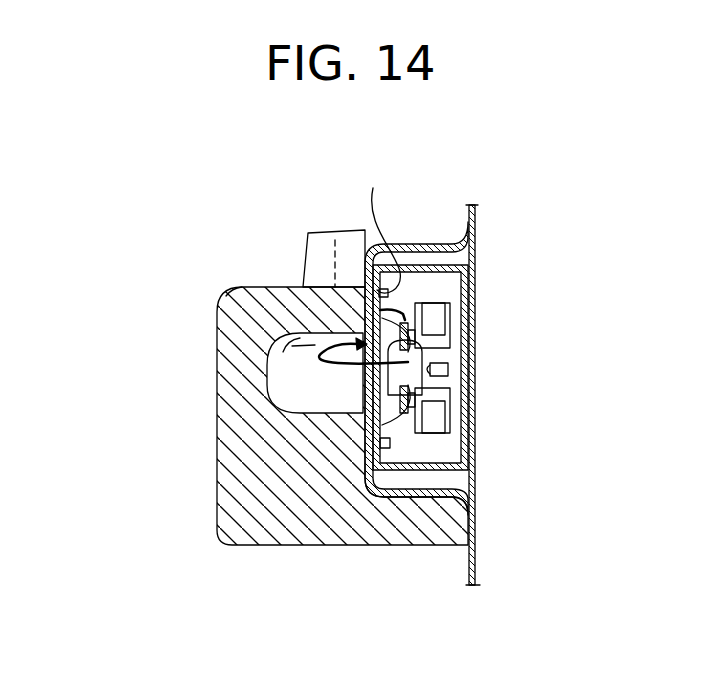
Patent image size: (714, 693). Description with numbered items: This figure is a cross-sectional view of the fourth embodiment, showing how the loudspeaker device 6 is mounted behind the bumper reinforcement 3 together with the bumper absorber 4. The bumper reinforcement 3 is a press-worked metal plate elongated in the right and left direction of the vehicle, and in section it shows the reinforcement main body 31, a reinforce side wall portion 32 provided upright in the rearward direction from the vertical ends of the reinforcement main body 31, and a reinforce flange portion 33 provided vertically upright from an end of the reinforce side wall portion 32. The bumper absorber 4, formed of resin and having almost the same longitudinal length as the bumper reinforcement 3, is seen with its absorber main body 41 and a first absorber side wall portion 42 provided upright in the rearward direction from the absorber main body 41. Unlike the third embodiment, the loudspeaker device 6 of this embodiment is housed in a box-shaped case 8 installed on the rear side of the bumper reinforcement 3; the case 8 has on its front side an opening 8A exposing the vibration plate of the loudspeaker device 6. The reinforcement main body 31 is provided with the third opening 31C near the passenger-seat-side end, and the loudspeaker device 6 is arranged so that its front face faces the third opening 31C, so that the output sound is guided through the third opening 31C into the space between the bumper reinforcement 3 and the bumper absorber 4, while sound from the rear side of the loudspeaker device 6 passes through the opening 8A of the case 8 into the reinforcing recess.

The bumper reinforcement 3 is at (467, 358).
The bumper absorber 4 is at (297, 439).
The loudspeaker device 6 is at (445, 318).
The case 8 is at (451, 316).
The opening 8A is at (379, 230).
The reinforcement main body 31 is at (367, 280).
The third opening 31C is at (225, 295).
The reinforce side wall portion 32 is at (441, 242).
The reinforce flange portion 33 is at (476, 211).
The absorber main body 41 is at (227, 335).
The first absorber side wall portion 42 is at (327, 287).